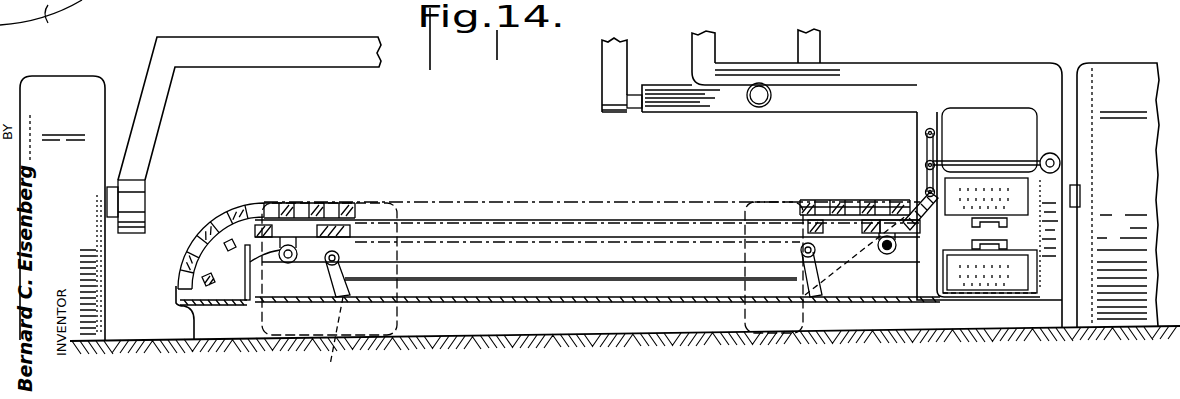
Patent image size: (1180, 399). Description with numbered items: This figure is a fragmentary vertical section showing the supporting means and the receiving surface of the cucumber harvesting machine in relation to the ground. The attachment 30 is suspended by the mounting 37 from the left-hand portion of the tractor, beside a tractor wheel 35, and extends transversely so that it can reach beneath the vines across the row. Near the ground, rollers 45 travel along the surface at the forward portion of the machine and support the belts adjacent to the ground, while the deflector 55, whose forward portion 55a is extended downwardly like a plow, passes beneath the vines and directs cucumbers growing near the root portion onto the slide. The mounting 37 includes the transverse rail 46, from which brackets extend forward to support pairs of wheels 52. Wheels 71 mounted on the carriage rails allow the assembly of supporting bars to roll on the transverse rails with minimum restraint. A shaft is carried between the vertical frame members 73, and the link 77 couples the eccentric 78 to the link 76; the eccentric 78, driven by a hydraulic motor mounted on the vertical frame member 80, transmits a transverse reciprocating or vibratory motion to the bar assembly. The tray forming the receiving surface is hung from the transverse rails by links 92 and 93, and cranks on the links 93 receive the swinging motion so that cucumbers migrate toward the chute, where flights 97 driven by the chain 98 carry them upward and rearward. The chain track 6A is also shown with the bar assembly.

The attachment 30 is at (324, 186).
The wheel 35 is at (92, 93).
The mounting 37 is at (995, 38).
The roller 45 is at (188, 1).
The transverse rail 46 is at (560, 270).
The wheels 52 is at (392, 325).
The deflector 55 is at (175, 300).
The forward portion of deflector 55a is at (190, 370).
The chain track 6A is at (812, 200).
The wheel 71 is at (268, 250).
The vertical frame member 73 is at (925, 122).
The link 76 is at (932, 203).
The link 77 is at (958, 168).
The eccentric 78 is at (1042, 157).
The vertical frame member 80 is at (1055, 130).
The link 92 is at (331, 321).
The link 93 is at (806, 300).
The flight 97 is at (1020, 195).
The chain 98 is at (1005, 228).